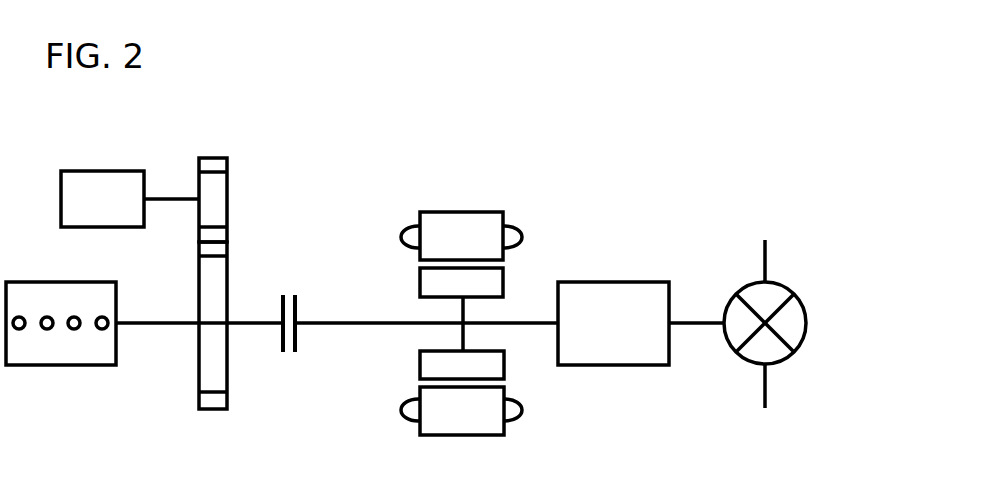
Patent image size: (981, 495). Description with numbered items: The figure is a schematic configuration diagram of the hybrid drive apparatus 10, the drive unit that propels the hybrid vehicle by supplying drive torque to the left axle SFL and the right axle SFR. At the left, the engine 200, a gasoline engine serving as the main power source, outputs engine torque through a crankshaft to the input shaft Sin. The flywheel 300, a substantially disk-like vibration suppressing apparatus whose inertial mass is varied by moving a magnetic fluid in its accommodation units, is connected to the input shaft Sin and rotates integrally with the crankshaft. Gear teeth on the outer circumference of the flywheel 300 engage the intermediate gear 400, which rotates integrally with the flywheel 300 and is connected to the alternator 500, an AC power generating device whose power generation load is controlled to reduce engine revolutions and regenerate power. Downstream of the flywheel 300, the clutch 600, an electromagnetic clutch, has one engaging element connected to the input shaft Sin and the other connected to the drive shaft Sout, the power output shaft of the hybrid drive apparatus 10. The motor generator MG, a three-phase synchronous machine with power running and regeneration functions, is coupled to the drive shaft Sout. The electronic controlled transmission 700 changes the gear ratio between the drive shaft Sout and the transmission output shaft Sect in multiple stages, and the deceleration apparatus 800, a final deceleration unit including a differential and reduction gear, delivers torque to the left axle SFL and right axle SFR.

The hybrid drive apparatus 10 is at (790, 119).
The engine 200 is at (62, 365).
The flywheel 300 is at (228, 280).
The intermediate gear 400 is at (228, 185).
The alternator 500 is at (144, 170).
The clutch 600 is at (297, 362).
The electronic controlled transmission (ECT) 700 is at (673, 281).
The deceleration apparatus 800 is at (805, 307).
The motor generator MG is at (533, 234).
The input shaft Sin is at (160, 325).
The drive shaft Sout is at (326, 322).
The transmission output shaft Sect is at (703, 325).
The left axle SFL is at (766, 262).
The right axle SFR is at (767, 392).